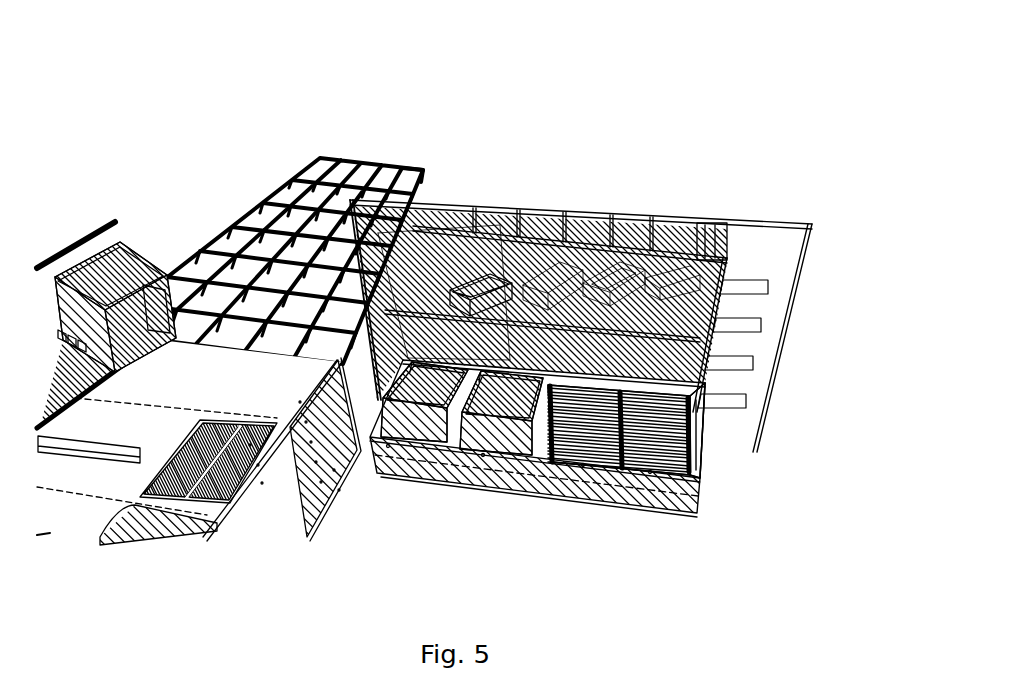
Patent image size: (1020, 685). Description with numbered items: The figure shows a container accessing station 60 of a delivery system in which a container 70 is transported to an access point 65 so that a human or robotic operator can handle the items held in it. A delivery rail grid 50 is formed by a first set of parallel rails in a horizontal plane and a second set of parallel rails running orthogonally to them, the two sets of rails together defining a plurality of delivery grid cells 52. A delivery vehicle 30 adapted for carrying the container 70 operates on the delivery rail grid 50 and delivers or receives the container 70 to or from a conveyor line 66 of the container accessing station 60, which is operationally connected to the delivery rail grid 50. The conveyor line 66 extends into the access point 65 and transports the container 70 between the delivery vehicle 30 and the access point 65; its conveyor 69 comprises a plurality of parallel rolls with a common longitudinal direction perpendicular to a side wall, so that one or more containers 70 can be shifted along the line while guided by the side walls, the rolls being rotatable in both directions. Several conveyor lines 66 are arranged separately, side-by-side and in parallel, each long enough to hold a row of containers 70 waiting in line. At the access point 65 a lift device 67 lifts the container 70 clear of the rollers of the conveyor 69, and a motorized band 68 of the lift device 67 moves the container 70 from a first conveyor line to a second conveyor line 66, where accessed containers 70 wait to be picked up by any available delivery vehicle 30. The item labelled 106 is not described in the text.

The delivery vehicle 30 is at (153, 263).
The delivery rail grid 50 is at (257, 242).
The delivery grid cells 52 is at (400, 176).
The container accessing station 60 is at (695, 495).
The access point 65 is at (462, 408).
The conveyor line 66 is at (667, 440).
The lift device 67 is at (677, 423).
The motorized band 68 is at (697, 430).
The conveyor 69 is at (619, 430).
The container 70 is at (95, 268).
The transfer bin 106 is at (115, 307).